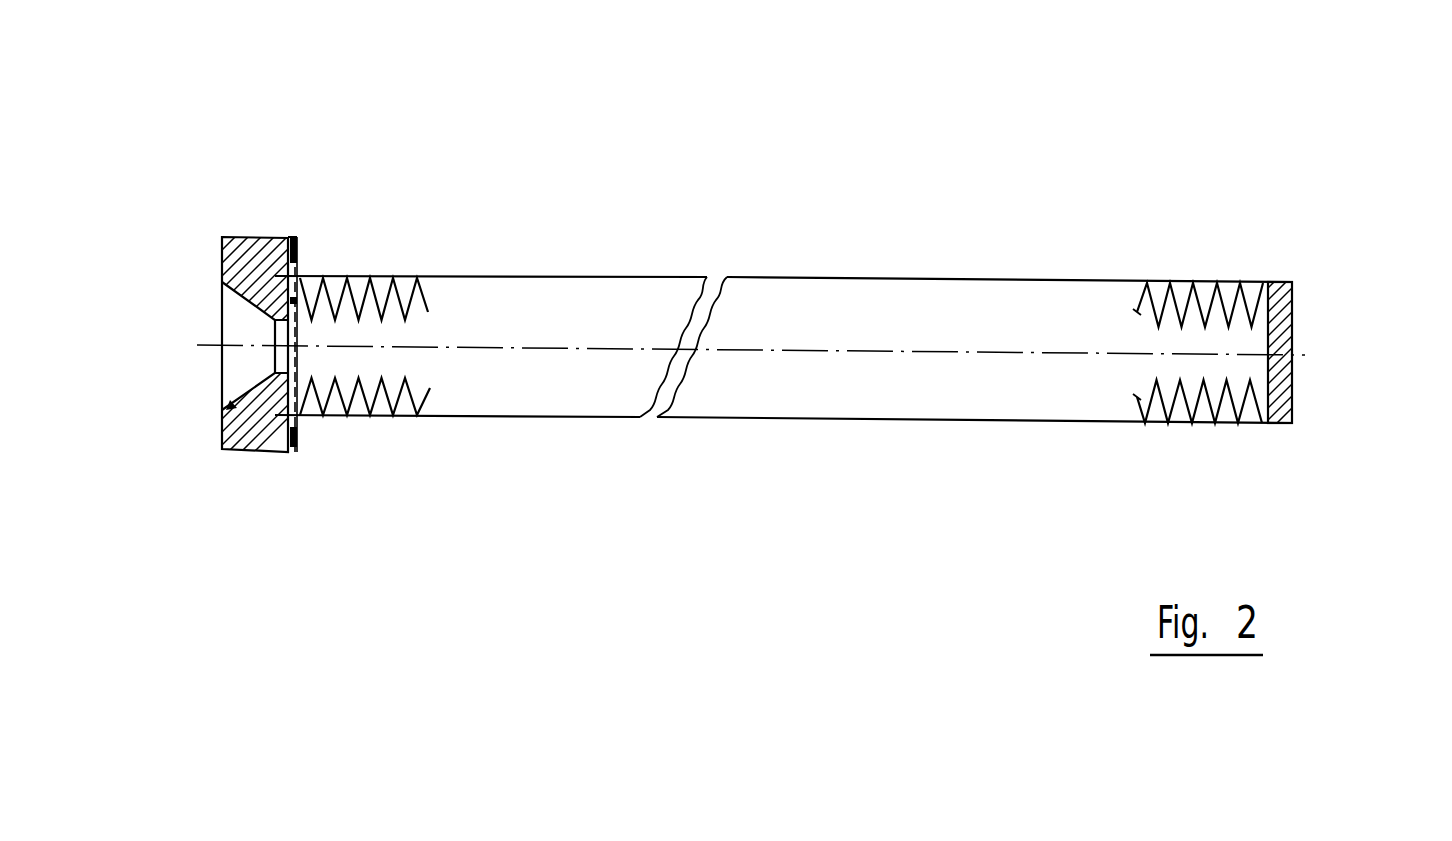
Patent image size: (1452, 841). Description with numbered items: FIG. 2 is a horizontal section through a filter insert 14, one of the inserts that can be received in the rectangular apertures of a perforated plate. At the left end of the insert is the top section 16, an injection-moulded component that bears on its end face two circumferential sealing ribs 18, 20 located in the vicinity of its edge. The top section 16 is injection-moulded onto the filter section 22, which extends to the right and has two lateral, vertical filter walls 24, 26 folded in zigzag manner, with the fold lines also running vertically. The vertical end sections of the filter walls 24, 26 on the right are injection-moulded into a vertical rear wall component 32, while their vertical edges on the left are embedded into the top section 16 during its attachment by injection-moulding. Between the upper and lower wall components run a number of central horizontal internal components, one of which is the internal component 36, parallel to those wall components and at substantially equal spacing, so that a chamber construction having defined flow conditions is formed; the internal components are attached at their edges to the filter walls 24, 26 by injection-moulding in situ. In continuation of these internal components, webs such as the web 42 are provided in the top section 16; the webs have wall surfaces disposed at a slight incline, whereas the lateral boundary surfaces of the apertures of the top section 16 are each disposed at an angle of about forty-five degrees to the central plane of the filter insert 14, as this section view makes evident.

The filter insert 14 is at (826, 128).
The top section 16 is at (240, 462).
The circumferential sealing rib 18 is at (300, 436).
The circumferential sealing rib 20 is at (300, 443).
The filter section 22 is at (901, 268).
The filter wall 24 is at (428, 398).
The filter wall 26 is at (424, 295).
The rear wall component 32 is at (1290, 384).
The internal component 36 is at (535, 400).
The web 42 is at (230, 383).